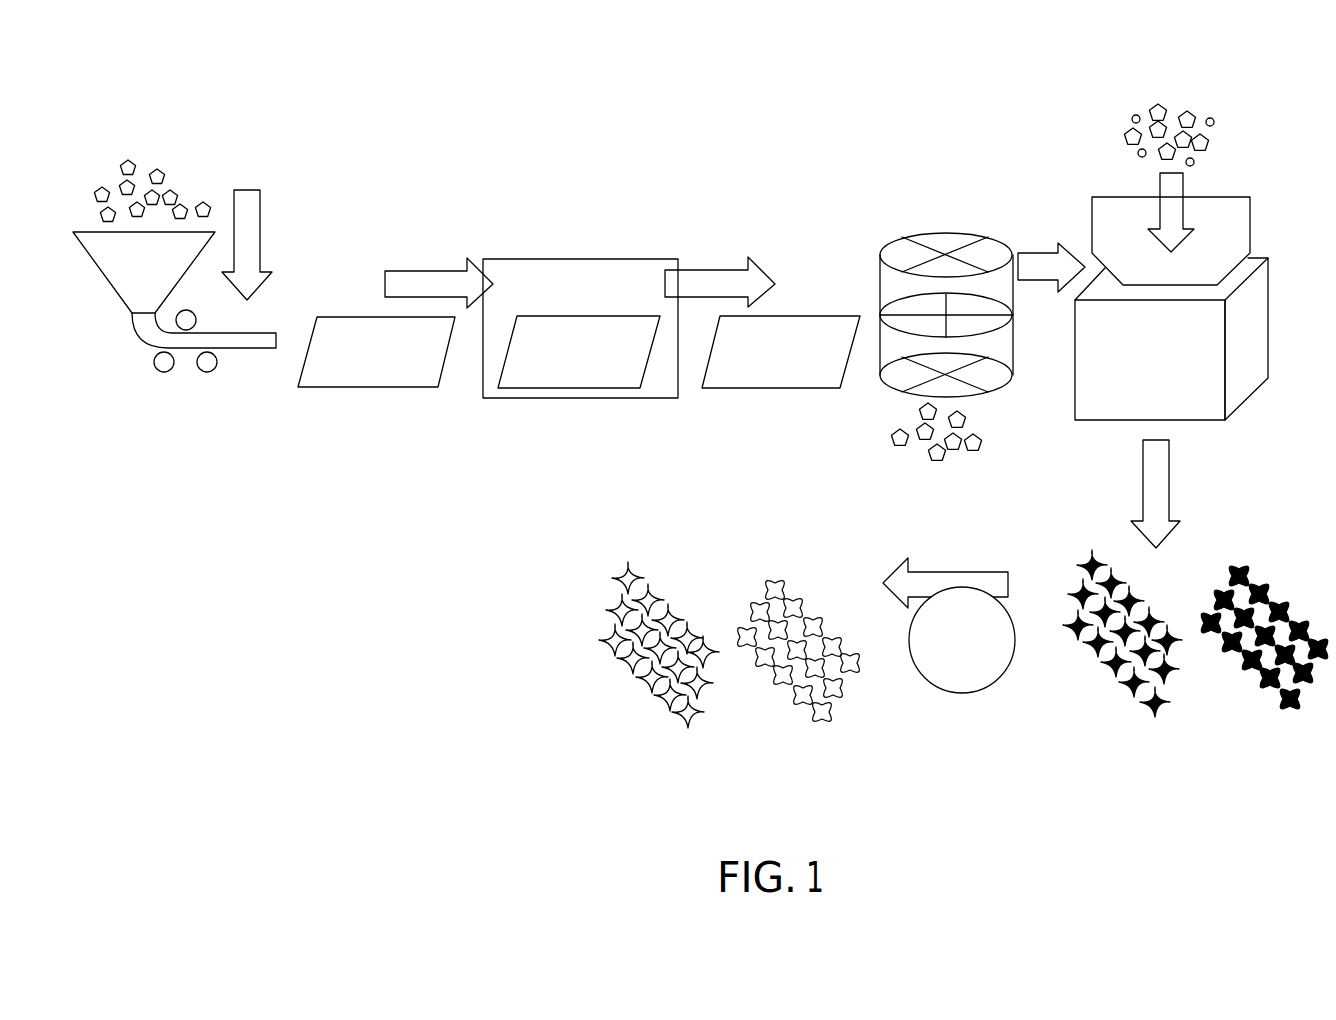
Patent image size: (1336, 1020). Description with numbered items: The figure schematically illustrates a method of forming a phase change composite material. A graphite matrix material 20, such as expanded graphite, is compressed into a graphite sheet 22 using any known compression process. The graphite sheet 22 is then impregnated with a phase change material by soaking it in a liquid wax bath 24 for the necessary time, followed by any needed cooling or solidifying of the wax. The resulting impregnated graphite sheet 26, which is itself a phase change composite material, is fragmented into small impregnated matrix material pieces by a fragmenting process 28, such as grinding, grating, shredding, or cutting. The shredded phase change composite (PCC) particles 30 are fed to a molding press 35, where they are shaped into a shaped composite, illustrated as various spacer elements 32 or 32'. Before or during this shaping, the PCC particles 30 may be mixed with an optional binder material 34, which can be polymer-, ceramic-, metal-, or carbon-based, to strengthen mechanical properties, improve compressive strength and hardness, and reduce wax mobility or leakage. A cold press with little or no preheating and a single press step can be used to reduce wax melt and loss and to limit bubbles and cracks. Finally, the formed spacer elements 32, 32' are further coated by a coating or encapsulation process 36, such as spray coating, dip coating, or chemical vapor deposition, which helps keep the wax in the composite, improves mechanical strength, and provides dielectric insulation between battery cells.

The graphite matrix material 20 is at (172, 196).
The graphite sheet 22 is at (332, 387).
The liquid wax bath 24 is at (617, 259).
The impregnated graphite sheet 26 is at (778, 388).
The fragmenting process 28 is at (932, 233).
The phase change composite (PCC) particles 30 is at (900, 446).
The spacer element 32 is at (890, 688).
The spacer element 32' is at (1033, 700).
The binder material 34 is at (1132, 118).
The molding press 35 is at (1252, 396).
The coating or encapsulation process 36 is at (965, 693).